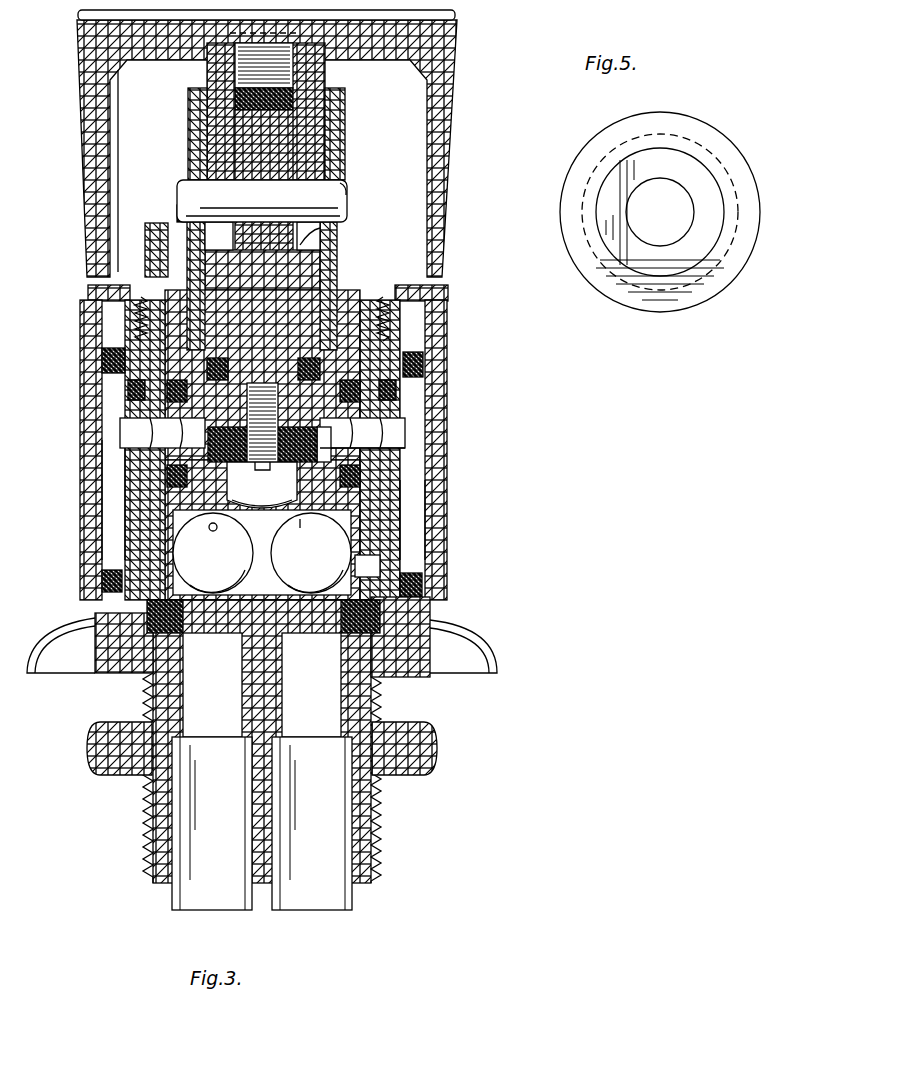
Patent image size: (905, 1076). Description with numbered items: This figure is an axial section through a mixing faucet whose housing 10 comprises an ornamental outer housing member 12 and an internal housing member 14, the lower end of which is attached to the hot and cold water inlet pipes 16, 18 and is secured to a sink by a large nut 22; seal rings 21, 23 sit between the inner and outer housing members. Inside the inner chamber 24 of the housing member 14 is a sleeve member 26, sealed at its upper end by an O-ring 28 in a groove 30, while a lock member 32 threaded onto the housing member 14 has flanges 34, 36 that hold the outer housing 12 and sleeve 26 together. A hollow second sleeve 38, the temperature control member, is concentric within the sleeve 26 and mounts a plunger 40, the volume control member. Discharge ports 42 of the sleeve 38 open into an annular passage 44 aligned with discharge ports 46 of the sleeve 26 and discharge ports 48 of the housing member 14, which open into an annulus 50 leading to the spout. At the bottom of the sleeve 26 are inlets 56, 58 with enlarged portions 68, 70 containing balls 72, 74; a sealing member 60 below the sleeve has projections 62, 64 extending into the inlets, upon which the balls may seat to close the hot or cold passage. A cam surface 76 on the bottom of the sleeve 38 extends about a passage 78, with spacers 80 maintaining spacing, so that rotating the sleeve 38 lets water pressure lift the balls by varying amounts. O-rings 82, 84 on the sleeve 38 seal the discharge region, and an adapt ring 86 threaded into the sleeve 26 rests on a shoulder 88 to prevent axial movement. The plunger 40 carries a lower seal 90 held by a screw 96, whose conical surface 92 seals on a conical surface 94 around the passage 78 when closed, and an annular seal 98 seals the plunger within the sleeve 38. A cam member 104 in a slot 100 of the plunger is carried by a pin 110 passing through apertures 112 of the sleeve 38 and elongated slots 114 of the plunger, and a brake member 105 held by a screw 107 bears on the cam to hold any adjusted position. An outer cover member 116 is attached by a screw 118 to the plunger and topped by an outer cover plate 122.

In FIG. 3, the housing 10 is at (440, 655).
In FIG. 3, the ornamental outer housing member 12 is at (447, 533).
In FIG. 3, the internal housing member 14 is at (133, 520).
In FIG. 3, the hot water inlet pipe 16 is at (205, 905).
In FIG. 3, the cold water inlet pipe 18 is at (325, 900).
In FIG. 3, the seal ring 21 is at (422, 585).
In FIG. 3, the nut 22 is at (437, 766).
In FIG. 3, the seal ring 23 is at (420, 360).
In FIG. 3, the inner chamber 24 is at (120, 612).
In FIG. 3, the sleeve member 26 is at (167, 475).
In FIG. 3, the O-ring 28 is at (383, 388).
In FIG. 3, the groove 30 is at (112, 360).
In FIG. 3, the lock member 32 is at (145, 228).
In FIG. 3, the flange 34 is at (88, 291).
In FIG. 3, the flange 36 is at (448, 290).
In FIG. 3, the second sleeve 38 is at (357, 353).
In FIG. 5, the second sleeve 38 is at (712, 138).
In FIG. 3, the plunger 40 is at (337, 265).
In FIG. 3, the discharge ports 42 is at (365, 435).
In FIG. 3, the annular passage 44 is at (345, 412).
In FIG. 3, the discharge ports 46 is at (322, 430).
In FIG. 3, the discharge ports 48 is at (385, 448).
In FIG. 3, the annulus 50 is at (110, 492).
In FIG. 3, the inlet 56 is at (183, 610).
In FIG. 3, the inlet 58 is at (341, 610).
In FIG. 3, the sealing member 60 is at (150, 645).
In FIG. 3, the projection 62 is at (237, 603).
In FIG. 3, the projection 64 is at (286, 598).
In FIG. 3, the enlarged portion 68 is at (112, 580).
In FIG. 3, the enlarged portion 70 is at (357, 567).
In FIG. 3, the ball 72 is at (213, 553).
In FIG. 3, the ball 74 is at (311, 553).
In FIG. 3, the cam surface 76 is at (312, 531).
In FIG. 5, the cam surface 76 is at (617, 183).
In FIG. 3, the passage 78 is at (208, 533).
In FIG. 5, the passage 78 is at (680, 236).
In FIG. 3, the spacers 80 is at (402, 508).
In FIG. 3, the O-ring 82 is at (363, 480).
In FIG. 5, the O-ring 82 is at (743, 210).
In FIG. 3, the O-ring 84 is at (135, 392).
In FIG. 3, the adapt ring 86 is at (137, 310).
In FIG. 3, the shoulder 88 is at (387, 305).
In FIG. 3, the lower seal 90 is at (210, 445).
In FIG. 3, the conical surface 92 is at (262, 496).
In FIG. 3, the conical surface 94 is at (262, 485).
In FIG. 3, the screw 96 is at (130, 418).
In FIG. 3, the annular seal 98 is at (215, 368).
In FIG. 3, the slot 100 is at (328, 44).
In FIG. 3, the cam member 104 is at (290, 143).
In FIG. 3, the brake member 105 is at (248, 97).
In FIG. 3, the screw 107 is at (298, 50).
In FIG. 3, the pin 110 is at (347, 212).
In FIG. 3, the apertures 112 is at (180, 182).
In FIG. 3, the elongated slots 114 is at (180, 210).
In FIG. 3, the outer cover member 116 is at (455, 112).
In FIG. 3, the screw 118 is at (290, 33).
In FIG. 3, the outer cover plate 122 is at (455, 15).